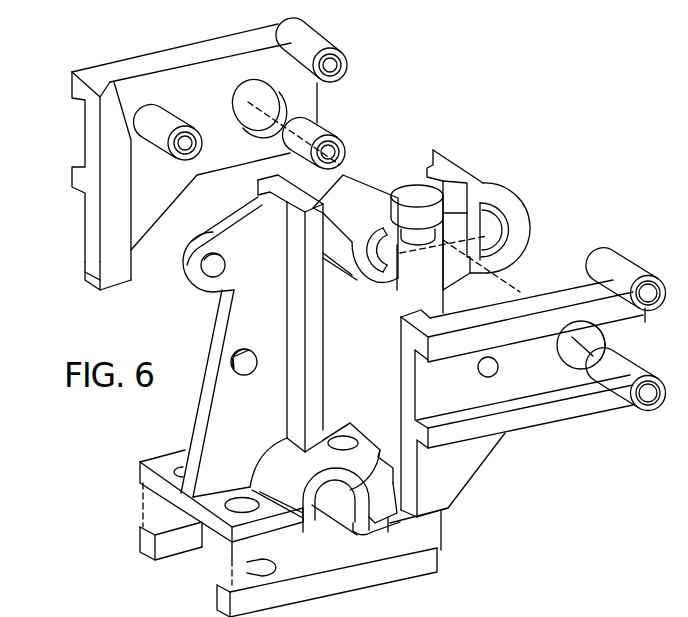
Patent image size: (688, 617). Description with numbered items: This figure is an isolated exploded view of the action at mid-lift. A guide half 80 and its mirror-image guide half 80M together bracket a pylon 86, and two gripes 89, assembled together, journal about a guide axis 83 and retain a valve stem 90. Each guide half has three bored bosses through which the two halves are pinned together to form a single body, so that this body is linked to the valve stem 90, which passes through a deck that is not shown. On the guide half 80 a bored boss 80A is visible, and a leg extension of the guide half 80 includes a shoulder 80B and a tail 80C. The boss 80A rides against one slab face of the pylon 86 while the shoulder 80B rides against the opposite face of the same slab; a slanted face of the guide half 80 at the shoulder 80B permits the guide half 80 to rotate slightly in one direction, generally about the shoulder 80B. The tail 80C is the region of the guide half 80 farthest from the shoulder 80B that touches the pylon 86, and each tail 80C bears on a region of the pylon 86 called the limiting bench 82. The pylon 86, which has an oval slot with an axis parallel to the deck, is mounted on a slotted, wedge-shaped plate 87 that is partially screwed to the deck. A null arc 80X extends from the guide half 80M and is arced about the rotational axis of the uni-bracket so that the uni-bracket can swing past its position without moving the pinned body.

The guide half 80 is at (216, 103).
The bored boss 80A is at (158, 130).
The shoulder 80B is at (125, 145).
The tail 80C is at (127, 278).
The limiting bench 82 is at (308, 367).
The guide axis 83 is at (600, 356).
The pylon 86 is at (256, 432).
The slotted, wedge-shaped plate 87 is at (328, 566).
The gripes 89 is at (358, 198).
The valve stem 90 is at (431, 295).
The mirror-image guide half 80M is at (549, 376).
The null arc 80X is at (443, 418).